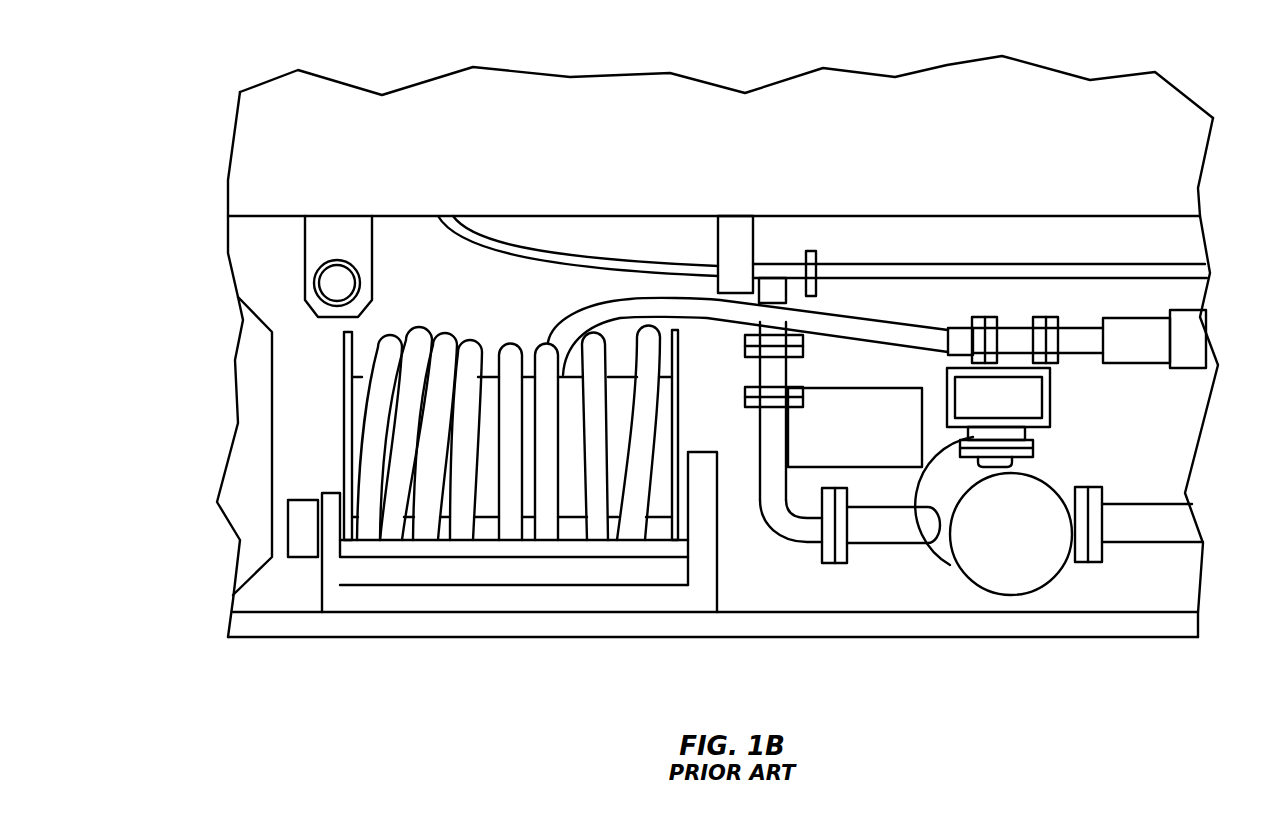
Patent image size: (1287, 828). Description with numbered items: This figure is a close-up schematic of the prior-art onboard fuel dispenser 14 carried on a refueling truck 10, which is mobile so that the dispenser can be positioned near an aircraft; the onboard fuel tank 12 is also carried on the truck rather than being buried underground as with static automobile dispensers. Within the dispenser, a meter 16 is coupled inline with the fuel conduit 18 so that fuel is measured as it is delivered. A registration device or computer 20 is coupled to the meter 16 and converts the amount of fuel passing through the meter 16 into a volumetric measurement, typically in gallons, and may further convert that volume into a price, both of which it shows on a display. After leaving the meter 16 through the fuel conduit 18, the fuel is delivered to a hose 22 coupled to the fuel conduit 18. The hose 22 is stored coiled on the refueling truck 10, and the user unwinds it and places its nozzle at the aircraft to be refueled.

The refueling truck 10 is at (196, 153).
The onboard fuel tank 12 is at (992, 146).
The onboard fuel dispenser 14 is at (302, 457).
The meter 16 is at (1010, 537).
The fuel conduit 18 is at (877, 522).
The registration device or computer 20 is at (1015, 395).
The hose 22 is at (458, 470).